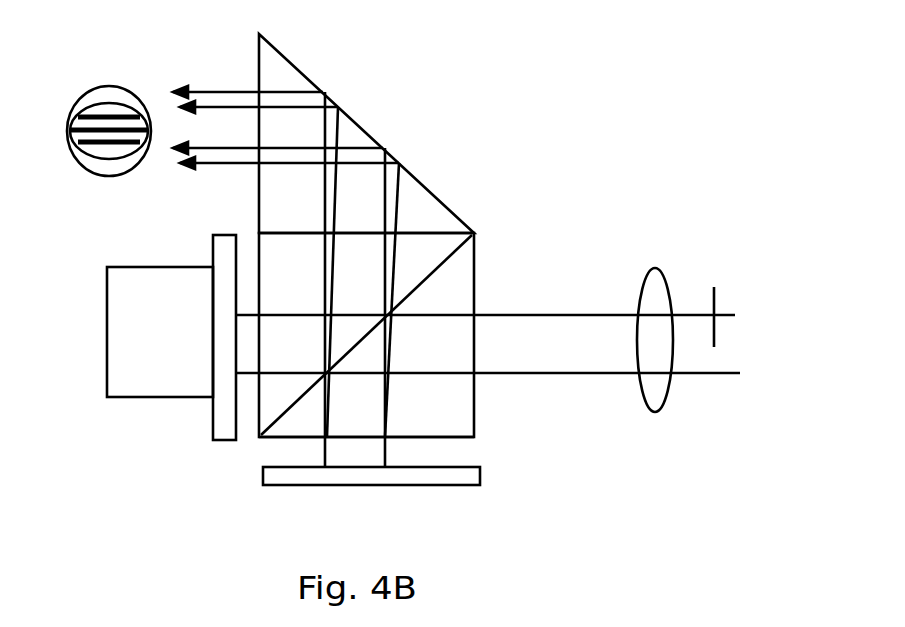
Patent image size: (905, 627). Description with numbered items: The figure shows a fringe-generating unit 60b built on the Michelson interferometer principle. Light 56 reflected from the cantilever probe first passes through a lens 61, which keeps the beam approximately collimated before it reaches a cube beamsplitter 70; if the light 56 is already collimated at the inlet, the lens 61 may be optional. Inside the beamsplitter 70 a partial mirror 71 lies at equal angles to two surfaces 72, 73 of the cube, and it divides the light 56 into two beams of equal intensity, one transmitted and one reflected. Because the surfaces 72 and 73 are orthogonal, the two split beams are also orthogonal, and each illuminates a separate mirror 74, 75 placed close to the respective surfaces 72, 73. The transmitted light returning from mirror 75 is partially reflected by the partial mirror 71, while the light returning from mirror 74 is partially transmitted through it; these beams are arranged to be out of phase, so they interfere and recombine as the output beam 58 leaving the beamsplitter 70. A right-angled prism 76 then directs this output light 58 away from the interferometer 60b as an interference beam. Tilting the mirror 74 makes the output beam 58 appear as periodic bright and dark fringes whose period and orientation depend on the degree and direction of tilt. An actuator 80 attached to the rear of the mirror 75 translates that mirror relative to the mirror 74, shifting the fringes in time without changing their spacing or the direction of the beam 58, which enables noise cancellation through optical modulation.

The output beam 58 is at (226, 125).
The fringe-generating unit 60b is at (561, 190).
The right-angled prism 76 is at (427, 210).
The cube beamsplitter 70 is at (448, 412).
The partial mirror 71 is at (447, 257).
The surface of the beamsplitter 72 is at (475, 437).
The surface of the beamsplitter 73 is at (257, 415).
The mirror 74 is at (468, 478).
The mirror 75 is at (225, 412).
The actuator 80 is at (135, 337).
The lens 61 is at (655, 402).
The light beam 56 is at (717, 291).